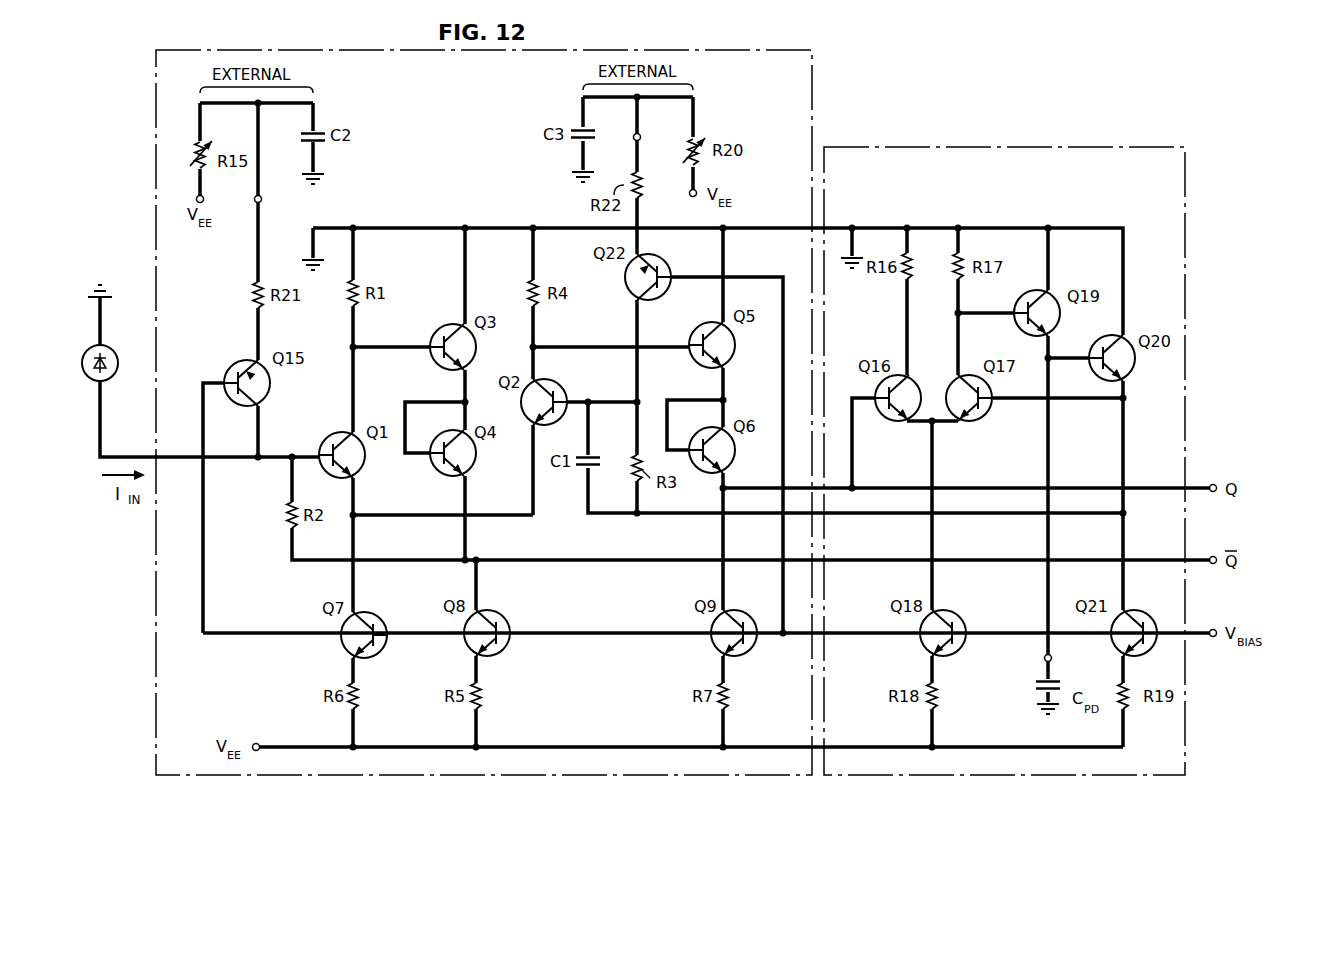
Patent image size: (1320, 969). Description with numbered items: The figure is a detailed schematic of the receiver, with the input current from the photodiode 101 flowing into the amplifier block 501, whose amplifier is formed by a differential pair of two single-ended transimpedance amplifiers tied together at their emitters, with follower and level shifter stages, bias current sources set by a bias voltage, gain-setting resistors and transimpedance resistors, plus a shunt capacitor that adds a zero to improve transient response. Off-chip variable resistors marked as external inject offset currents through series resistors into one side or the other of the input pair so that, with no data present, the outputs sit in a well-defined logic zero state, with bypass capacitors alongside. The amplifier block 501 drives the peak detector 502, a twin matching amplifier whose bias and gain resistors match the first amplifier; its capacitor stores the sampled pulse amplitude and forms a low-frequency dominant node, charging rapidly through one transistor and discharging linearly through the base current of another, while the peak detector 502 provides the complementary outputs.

The photodiode 101 is at (118, 357).
The amplifier A1 block 501 is at (813, 78).
The peak detector 502 is at (1003, 145).